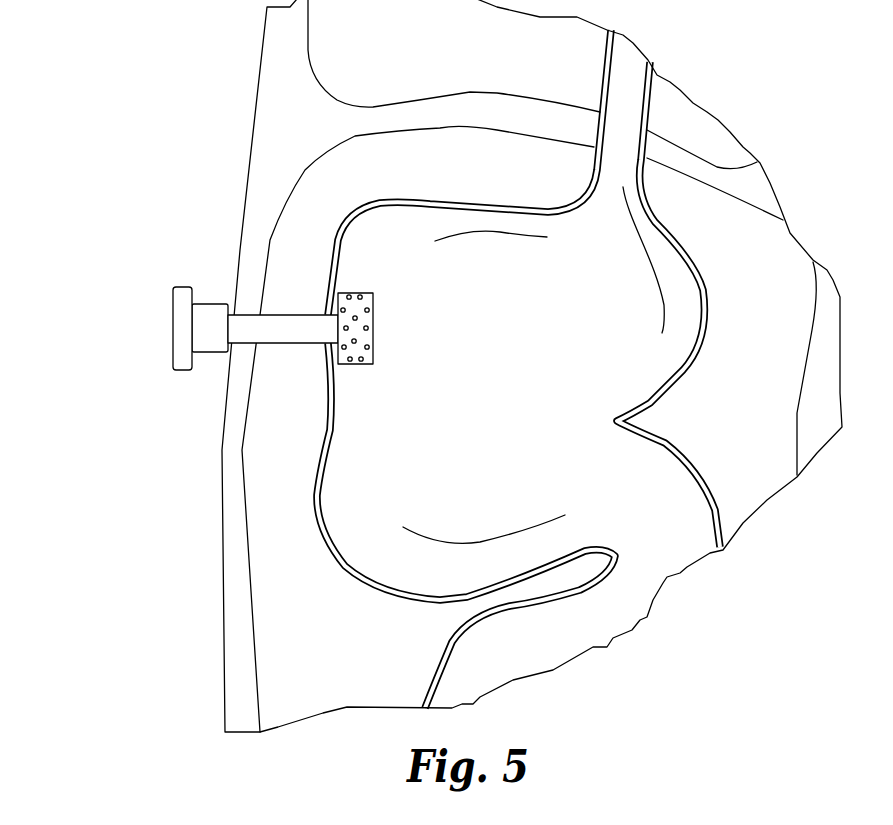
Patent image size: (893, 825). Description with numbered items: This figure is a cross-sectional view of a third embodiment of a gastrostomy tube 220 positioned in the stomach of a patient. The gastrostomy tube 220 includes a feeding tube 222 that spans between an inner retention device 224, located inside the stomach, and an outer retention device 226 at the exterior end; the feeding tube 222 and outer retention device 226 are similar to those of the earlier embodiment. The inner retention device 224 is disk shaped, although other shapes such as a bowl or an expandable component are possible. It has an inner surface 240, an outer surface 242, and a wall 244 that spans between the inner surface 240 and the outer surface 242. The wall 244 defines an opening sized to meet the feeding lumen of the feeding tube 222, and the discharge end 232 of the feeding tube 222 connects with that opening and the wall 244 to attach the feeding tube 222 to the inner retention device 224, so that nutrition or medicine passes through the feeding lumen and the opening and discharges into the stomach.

The gastrostomy tube 220 is at (228, 286).
The feeding tube 222 is at (256, 328).
The inner retention device 224 is at (352, 317).
The outer retention device 226 is at (163, 302).
The discharge end 232 is at (325, 328).
The inner surface 240 is at (382, 312).
The outer surface 242 is at (328, 361).
The wall 244 is at (353, 344).